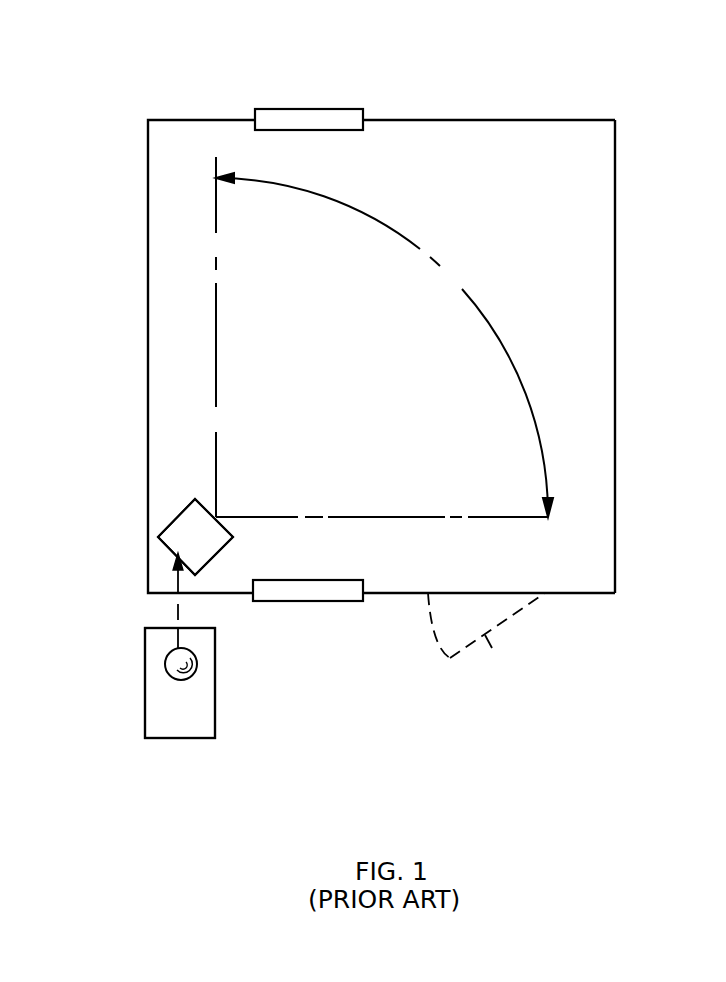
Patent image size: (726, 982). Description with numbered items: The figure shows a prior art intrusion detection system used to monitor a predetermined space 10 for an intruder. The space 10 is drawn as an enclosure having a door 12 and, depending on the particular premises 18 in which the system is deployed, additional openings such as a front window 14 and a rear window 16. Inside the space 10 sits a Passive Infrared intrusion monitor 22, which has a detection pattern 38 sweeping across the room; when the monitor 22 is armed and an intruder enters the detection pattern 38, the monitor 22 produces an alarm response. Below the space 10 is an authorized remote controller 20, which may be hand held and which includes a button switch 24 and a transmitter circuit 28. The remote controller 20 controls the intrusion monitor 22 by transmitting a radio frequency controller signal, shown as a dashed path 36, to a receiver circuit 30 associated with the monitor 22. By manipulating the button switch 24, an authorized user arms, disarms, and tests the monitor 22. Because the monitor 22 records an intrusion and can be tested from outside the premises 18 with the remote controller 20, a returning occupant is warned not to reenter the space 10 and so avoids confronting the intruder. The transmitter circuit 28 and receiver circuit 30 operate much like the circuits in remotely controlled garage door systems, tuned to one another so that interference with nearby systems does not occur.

The predetermined space 10 is at (427, 131).
The door 12 is at (492, 648).
The front window 14 is at (292, 601).
The rear window 16 is at (285, 109).
The premises 18 is at (615, 285).
The remote controller 20 is at (235, 728).
The Passive Infrared (PIR) intrusion monitor 22 is at (192, 500).
The button switch 24 is at (165, 662).
The transmitter circuit 28 is at (155, 697).
The receiver circuit 30 is at (168, 529).
The light beam 36 is at (187, 557).
The detection pattern 38 is at (477, 305).